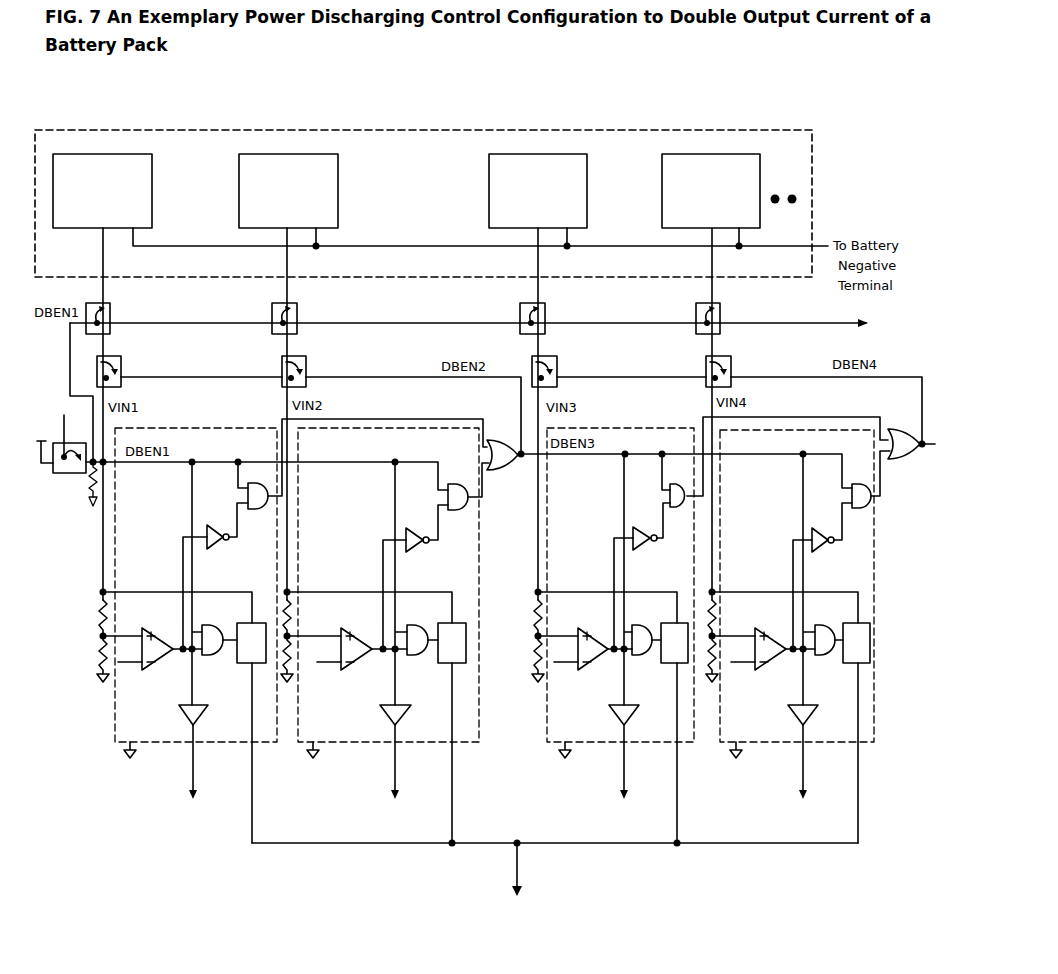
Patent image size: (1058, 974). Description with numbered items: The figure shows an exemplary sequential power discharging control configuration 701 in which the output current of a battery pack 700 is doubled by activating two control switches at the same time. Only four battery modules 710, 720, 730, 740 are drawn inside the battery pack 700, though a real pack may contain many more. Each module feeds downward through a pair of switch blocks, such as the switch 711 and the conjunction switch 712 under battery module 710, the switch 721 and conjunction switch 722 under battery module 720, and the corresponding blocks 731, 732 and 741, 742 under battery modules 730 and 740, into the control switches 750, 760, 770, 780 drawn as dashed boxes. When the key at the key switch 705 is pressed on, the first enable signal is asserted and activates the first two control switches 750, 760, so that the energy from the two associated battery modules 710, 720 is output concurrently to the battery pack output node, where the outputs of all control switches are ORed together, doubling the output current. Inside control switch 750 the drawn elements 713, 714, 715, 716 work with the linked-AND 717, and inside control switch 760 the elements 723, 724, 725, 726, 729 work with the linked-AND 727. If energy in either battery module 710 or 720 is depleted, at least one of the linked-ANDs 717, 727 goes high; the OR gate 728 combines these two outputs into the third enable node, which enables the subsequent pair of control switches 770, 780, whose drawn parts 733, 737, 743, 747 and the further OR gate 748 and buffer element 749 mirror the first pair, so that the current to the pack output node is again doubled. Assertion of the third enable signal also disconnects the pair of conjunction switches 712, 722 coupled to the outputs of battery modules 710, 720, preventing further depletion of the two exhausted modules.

The battery pack 700 is at (639, 129).
The power discharging control configuration 701 is at (226, 867).
The key switch 705 is at (52, 475).
The battery module 710 is at (102, 191).
The key-on switch 711 is at (112, 309).
The conjunction switch 712 is at (124, 360).
The comparator 713 is at (160, 668).
The AND gate 714 is at (212, 657).
The driver block 715 is at (258, 665).
The inverter 716 is at (215, 552).
The linked-AND 717 is at (258, 511).
The battery module 720 is at (288, 191).
The key-on switch 721 is at (300, 309).
The conjunction switch 722 is at (311, 359).
The comparator 723 is at (360, 668).
The AND gate 724 is at (414, 657).
The driver block 725 is at (459, 665).
The inverter 726 is at (415, 554).
The linked-AND 727 is at (455, 512).
The OR gate 728 is at (505, 471).
The buffer 729 is at (410, 713).
The battery module 730 is at (538, 191).
The key-on switch 731 is at (550, 309).
The conjunction switch 732 is at (562, 357).
The comparator 733 is at (592, 668).
The AND gate 737 is at (680, 509).
The battery module 740 is at (711, 191).
The key-on switch 741 is at (724, 307).
The conjunction switch 742 is at (736, 357).
The comparator 743 is at (770, 668).
The AND gate 747 is at (860, 510).
The OR gate 748 is at (908, 461).
The buffer 749 is at (834, 718).
The control switch 750 is at (175, 745).
The control switch 760 is at (348, 745).
The control switch 770 is at (598, 745).
The control switch 780 is at (775, 745).